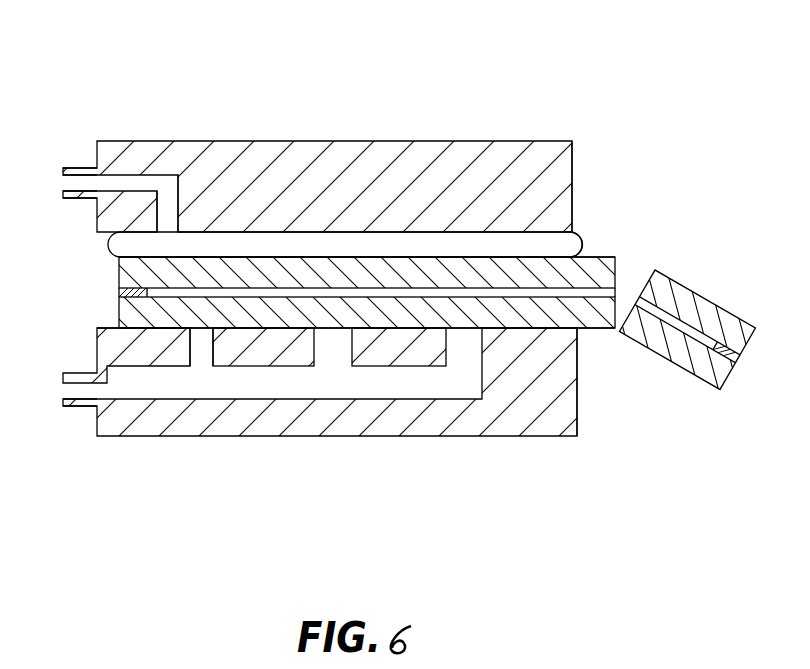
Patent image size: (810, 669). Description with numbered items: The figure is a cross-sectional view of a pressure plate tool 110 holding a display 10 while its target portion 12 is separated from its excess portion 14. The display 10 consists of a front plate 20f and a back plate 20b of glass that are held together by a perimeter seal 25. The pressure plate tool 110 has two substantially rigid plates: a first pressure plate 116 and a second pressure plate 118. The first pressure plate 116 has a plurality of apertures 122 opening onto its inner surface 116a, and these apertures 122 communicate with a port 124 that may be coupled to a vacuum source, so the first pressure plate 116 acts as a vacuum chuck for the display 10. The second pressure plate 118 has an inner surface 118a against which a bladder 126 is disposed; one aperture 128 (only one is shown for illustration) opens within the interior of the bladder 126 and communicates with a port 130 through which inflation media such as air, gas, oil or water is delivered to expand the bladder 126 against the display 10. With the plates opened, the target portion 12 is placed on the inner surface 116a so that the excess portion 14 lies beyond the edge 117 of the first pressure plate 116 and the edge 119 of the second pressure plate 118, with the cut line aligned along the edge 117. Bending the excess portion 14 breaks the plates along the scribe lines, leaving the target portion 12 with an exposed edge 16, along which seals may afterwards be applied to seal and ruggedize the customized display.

The pressure plate tool 110 is at (405, 260).
The port 130 is at (82, 166).
The apertures 128 is at (158, 210).
The second pressure plate 118 is at (333, 150).
The inner surface 118a is at (337, 233).
The front plate 20f is at (457, 258).
The edge 119 is at (572, 160).
The bladder 126 is at (582, 235).
The display 10 is at (372, 293).
The target portion 12 is at (318, 189).
The exposed edge 16 is at (409, 363).
The excess portion 14 is at (726, 283).
The perimeter seal 25 is at (118, 290).
The inner surface 116a is at (108, 328).
The apertures 122 is at (192, 346).
The port 124 is at (77, 408).
The first pressure plate 116 is at (312, 417).
The back plate 20b is at (530, 312).
The edge 117 is at (599, 415).